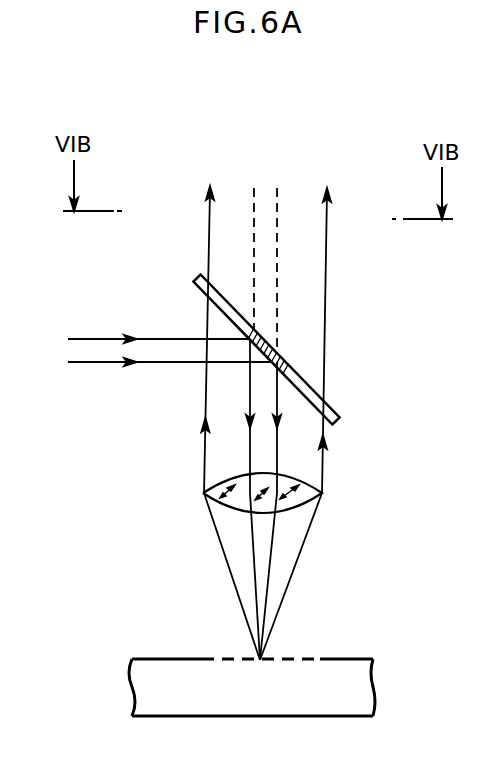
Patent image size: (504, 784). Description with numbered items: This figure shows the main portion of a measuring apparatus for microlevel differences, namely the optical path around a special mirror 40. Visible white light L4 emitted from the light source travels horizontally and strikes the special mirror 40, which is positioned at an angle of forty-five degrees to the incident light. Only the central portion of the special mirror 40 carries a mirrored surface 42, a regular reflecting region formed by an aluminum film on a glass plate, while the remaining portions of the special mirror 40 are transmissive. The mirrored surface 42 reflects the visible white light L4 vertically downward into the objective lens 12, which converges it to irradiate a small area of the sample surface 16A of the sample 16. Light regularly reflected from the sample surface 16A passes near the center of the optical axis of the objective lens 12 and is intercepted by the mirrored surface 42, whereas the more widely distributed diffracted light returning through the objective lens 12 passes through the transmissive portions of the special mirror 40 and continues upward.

The visible white light L4 is at (142, 350).
The special mirror 40 is at (301, 350).
The mirrored surface 42 is at (262, 358).
The objective lens 12 is at (292, 476).
The sample 16 is at (290, 653).
The sample surface 16A is at (340, 659).